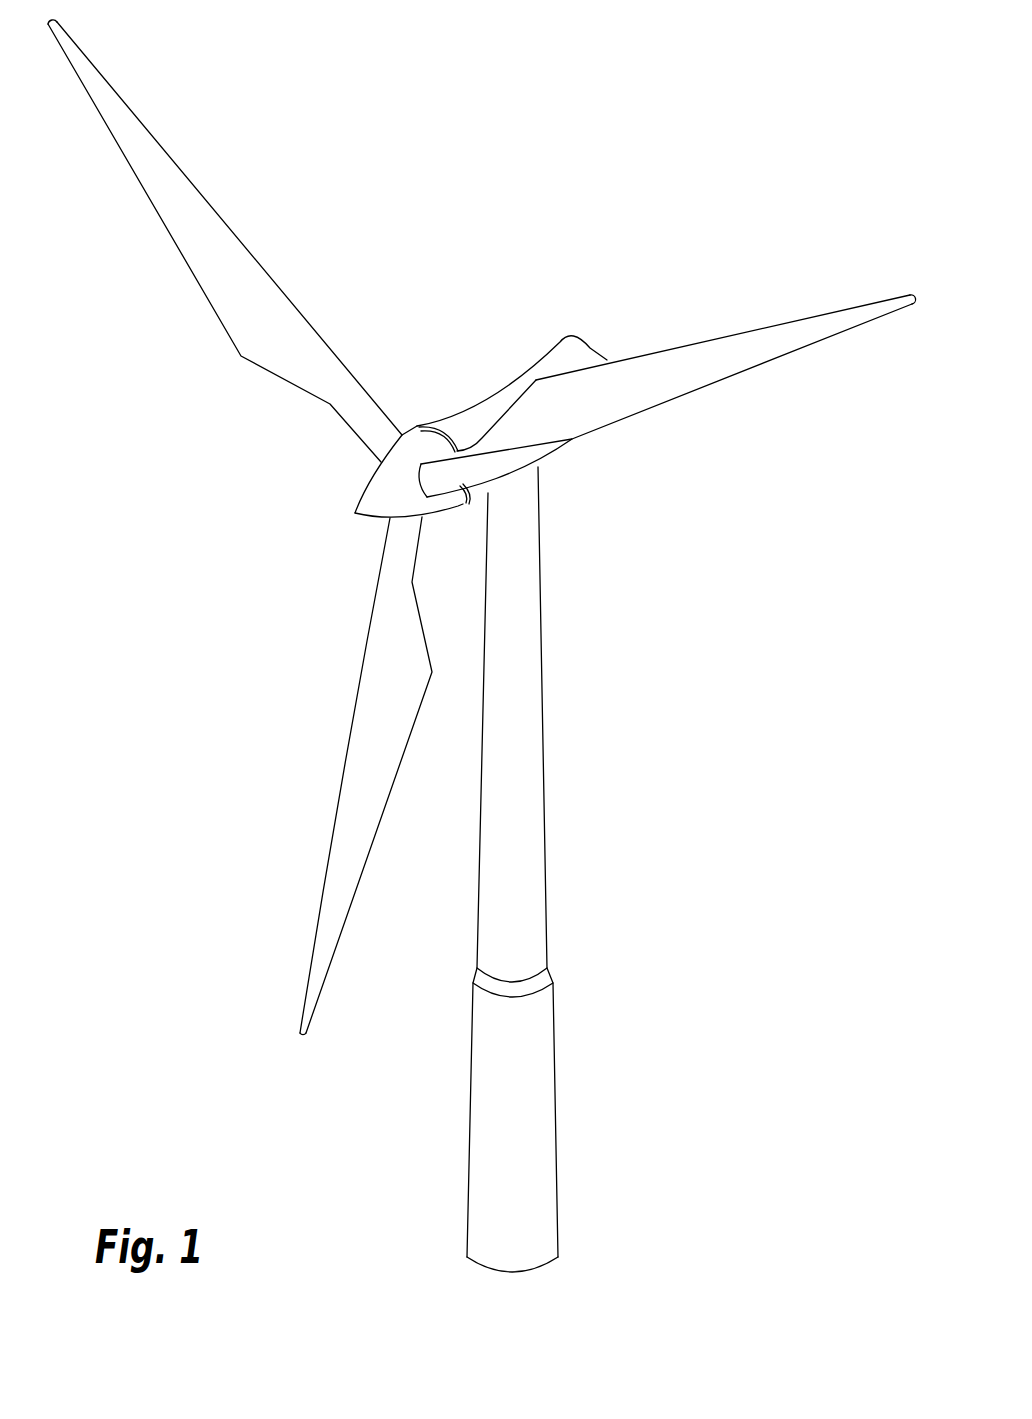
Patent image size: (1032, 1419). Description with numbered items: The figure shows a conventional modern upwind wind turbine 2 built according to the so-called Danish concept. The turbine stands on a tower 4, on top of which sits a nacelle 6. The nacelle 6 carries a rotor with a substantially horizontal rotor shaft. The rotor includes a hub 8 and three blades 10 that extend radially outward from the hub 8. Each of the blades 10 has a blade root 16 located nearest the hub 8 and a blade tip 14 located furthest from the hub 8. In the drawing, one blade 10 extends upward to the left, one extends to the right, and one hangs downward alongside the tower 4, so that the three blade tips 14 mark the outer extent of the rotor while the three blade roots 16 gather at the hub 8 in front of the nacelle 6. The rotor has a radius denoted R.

The wind turbine 2 is at (657, 800).
The tower 4 is at (530, 720).
The nacelle 6 is at (463, 405).
The hub 8 is at (377, 493).
The blades 10 is at (253, 330).
The blade tip 14 is at (93, 78).
The blade root 16 is at (380, 452).